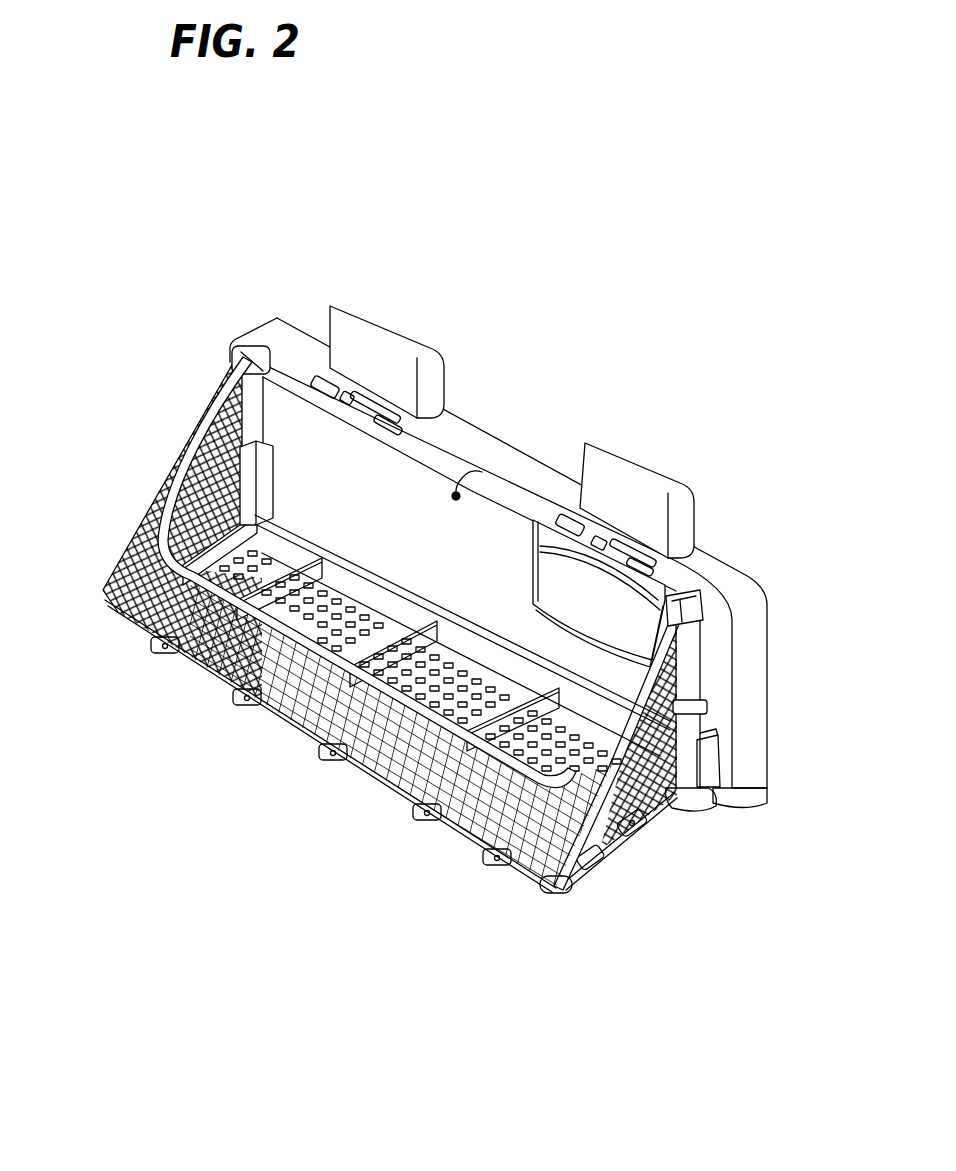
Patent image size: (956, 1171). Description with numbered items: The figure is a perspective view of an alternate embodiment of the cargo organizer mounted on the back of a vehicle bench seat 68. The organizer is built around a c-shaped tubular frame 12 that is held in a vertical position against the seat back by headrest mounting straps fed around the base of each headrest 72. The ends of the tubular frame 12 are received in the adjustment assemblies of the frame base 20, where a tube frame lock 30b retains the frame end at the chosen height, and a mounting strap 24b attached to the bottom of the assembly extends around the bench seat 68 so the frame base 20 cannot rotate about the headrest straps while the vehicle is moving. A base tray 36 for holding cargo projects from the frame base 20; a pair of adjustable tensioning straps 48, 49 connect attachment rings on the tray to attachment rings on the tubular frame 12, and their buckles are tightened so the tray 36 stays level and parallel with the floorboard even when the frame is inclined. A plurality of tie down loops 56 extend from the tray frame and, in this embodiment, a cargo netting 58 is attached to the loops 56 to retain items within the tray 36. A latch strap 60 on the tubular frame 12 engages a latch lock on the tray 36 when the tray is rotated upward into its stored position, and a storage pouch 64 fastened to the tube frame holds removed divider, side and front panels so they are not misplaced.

The c-shaped tubular frame 12 is at (428, 455).
The headrest 72 is at (400, 332).
The latch strap 60 is at (477, 460).
The storage pouch 64 is at (690, 598).
The vehicle bench seat 68 is at (760, 618).
The tube frame lock 30b is at (712, 782).
The mounting strap 24b is at (760, 795).
The adjustable tensioning strap 49 is at (165, 500).
The adjustable tensioning strap 48 is at (640, 830).
The base tray 36 is at (275, 550).
The frame base 20 is at (385, 598).
The cargo netting 58 is at (313, 718).
The tie down loops 56 is at (490, 863).